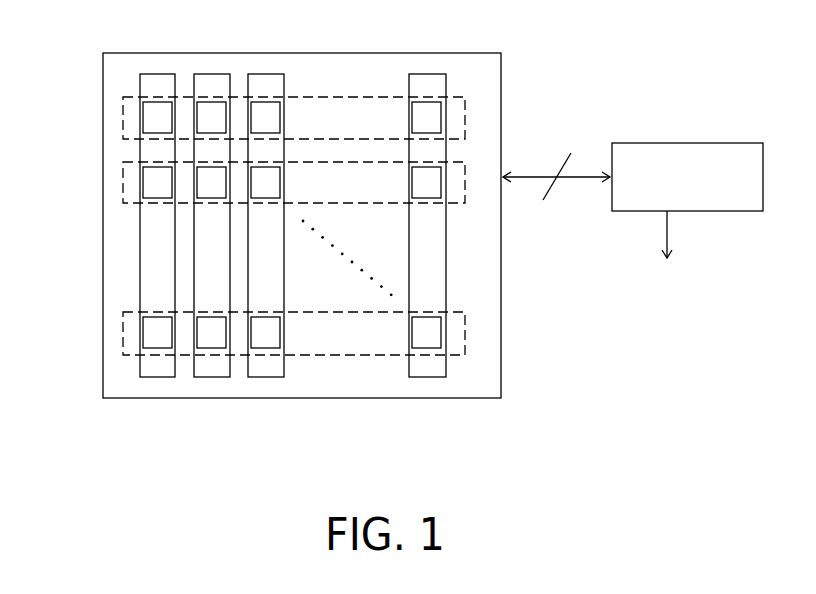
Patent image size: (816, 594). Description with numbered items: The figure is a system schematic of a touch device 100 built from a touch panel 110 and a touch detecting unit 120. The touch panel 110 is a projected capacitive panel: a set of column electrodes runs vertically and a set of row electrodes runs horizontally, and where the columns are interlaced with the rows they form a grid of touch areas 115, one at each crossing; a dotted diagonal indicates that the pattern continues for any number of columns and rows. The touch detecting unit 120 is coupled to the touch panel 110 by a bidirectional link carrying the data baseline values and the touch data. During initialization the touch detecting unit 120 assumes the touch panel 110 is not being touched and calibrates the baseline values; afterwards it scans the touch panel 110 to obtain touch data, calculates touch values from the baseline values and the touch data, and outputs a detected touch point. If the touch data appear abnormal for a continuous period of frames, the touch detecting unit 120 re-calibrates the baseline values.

The touch device 100 is at (750, 480).
The touch panel 110 is at (356, 53).
The touch area 115 is at (292, 226).
The touch detecting unit 120 is at (669, 143).